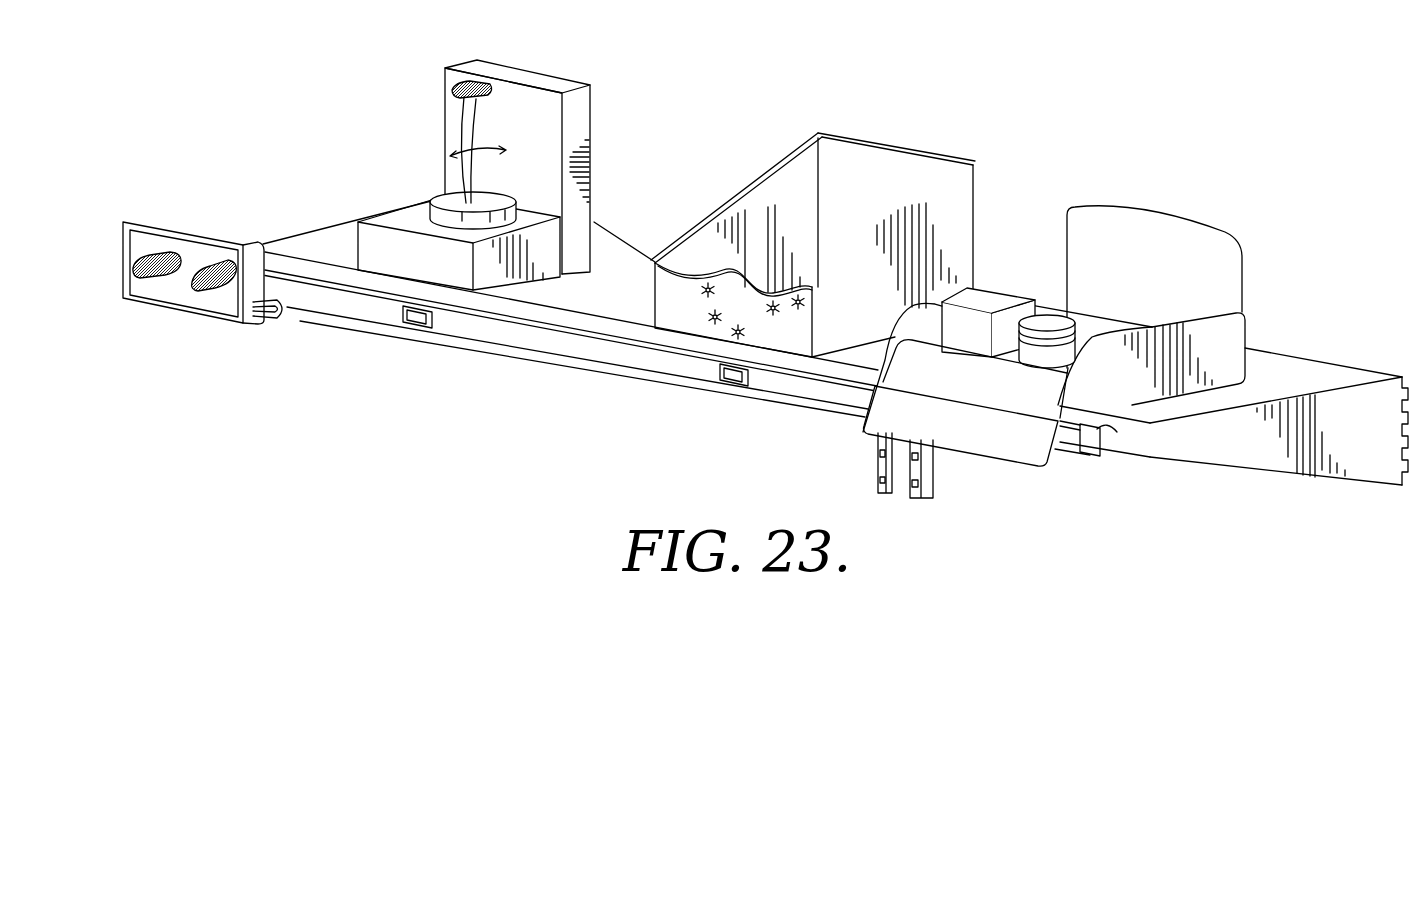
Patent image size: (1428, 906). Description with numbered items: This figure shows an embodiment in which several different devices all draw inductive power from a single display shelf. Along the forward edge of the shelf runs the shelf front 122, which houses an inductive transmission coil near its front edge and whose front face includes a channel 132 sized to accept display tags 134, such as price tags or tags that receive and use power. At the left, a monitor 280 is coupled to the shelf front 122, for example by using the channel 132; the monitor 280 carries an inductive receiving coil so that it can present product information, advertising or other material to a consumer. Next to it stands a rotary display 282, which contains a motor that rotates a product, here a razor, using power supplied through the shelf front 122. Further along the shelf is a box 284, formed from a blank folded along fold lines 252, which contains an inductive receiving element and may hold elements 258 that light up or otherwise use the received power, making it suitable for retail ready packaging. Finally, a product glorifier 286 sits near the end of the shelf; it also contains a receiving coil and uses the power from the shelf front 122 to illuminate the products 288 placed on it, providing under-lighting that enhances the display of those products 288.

The shelf front 122 is at (1115, 432).
The channel 132 is at (318, 302).
The display tags 134 is at (412, 324).
The fold lines 252 is at (829, 160).
The elements 258 is at (703, 298).
The monitor 280 is at (169, 226).
The rotary display 282 is at (387, 208).
The box 284 is at (902, 173).
The product glorifier 286 is at (1188, 213).
The products 288 is at (997, 298).